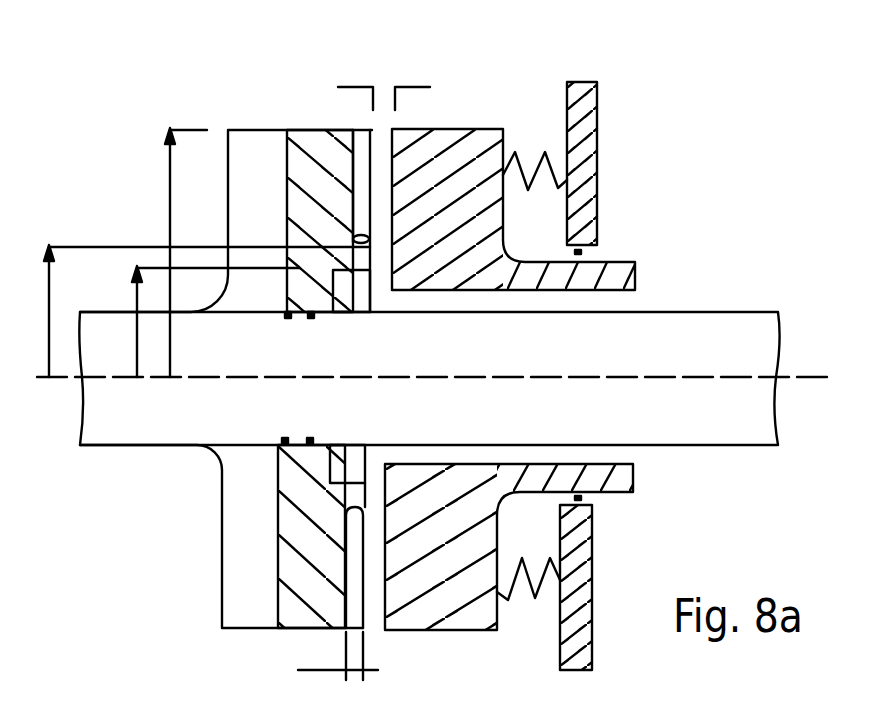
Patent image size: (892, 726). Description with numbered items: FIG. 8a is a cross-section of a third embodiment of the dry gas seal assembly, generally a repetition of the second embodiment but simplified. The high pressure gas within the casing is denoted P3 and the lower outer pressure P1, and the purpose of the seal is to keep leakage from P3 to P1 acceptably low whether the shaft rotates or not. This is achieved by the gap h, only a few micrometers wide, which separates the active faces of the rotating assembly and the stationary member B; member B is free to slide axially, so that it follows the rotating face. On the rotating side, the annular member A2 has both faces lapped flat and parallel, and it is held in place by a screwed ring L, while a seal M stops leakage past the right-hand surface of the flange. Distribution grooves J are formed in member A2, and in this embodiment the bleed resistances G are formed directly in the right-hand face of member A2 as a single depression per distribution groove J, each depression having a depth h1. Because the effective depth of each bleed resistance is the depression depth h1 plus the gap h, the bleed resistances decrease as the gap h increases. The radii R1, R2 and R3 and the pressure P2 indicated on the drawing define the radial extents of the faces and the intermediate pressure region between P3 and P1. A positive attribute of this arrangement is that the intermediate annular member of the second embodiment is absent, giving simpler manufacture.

The bleed resistance G is at (362, 145).
The gap h is at (384, 82).
The high pressure P3 is at (247, 157).
The outer radius of seal ring R3 is at (164, 252).
The radius at lip base R2 is at (189, 311).
The inner radius of seal ring R1 is at (193, 321).
The seal M is at (312, 318).
The member B is at (497, 277).
The screwed ring L is at (350, 458).
The lower outer pressure P1 is at (650, 376).
The pressure in lower housing chamber P2 is at (380, 482).
The depression depth h1 is at (338, 656).
The annular member A2 is at (310, 590).
The distribution groove J is at (365, 512).